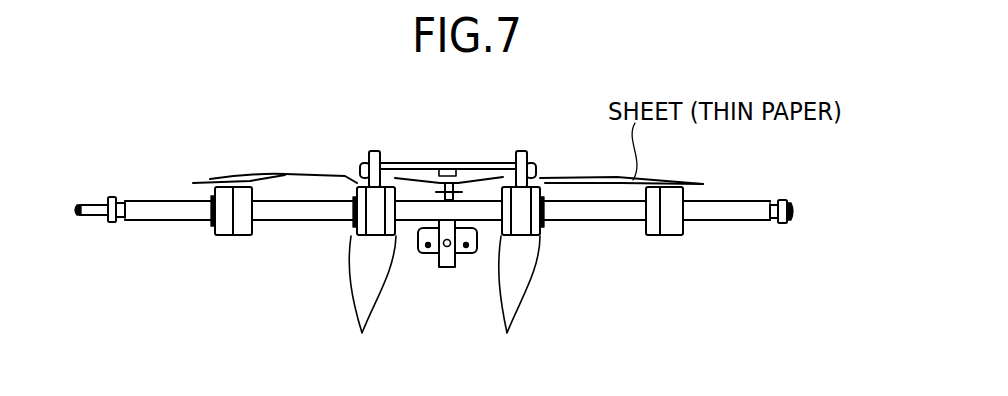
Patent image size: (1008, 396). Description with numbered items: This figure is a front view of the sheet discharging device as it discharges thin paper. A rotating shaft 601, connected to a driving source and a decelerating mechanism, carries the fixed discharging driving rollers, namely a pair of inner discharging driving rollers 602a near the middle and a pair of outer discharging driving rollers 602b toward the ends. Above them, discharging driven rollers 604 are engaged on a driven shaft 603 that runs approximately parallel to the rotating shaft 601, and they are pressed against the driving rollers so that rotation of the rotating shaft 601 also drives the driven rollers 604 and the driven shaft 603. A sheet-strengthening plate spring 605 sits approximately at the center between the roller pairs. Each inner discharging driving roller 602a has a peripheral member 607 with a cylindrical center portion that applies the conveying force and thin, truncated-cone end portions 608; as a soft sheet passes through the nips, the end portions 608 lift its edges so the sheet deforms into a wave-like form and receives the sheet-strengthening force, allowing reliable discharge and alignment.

The rotating shaft 601 is at (722, 221).
The inner discharging driving roller 602a is at (352, 233).
The outer discharging driving roller 602b is at (220, 236).
The driven shaft 603 is at (422, 163).
The discharging driven roller 604 is at (375, 152).
The sheet-strengthening plate spring 605 is at (443, 267).
The peripheral member 607 is at (372, 236).
The end portion 608 is at (440, 298).